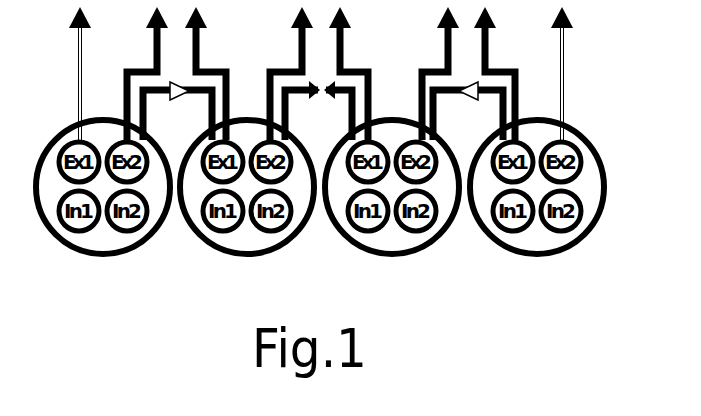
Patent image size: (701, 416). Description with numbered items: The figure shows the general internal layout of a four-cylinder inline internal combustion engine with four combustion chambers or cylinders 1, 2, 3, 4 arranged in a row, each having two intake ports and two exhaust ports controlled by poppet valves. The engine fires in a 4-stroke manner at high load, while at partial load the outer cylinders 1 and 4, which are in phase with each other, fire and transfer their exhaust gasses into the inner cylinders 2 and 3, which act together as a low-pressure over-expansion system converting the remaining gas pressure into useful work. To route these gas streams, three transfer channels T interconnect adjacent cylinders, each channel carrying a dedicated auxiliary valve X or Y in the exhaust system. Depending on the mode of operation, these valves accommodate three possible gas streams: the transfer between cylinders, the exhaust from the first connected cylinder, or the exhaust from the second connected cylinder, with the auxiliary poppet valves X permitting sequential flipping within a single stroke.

The first cylinder 1 is at (58, 244).
The second cylinder 2 is at (218, 248).
The third cylinder 3 is at (432, 241).
The fourth cylinder 4 is at (593, 230).
The transfer channel T is at (147, 110).
The auxiliary valve X is at (176, 98).
The auxiliary valve Y is at (323, 98).